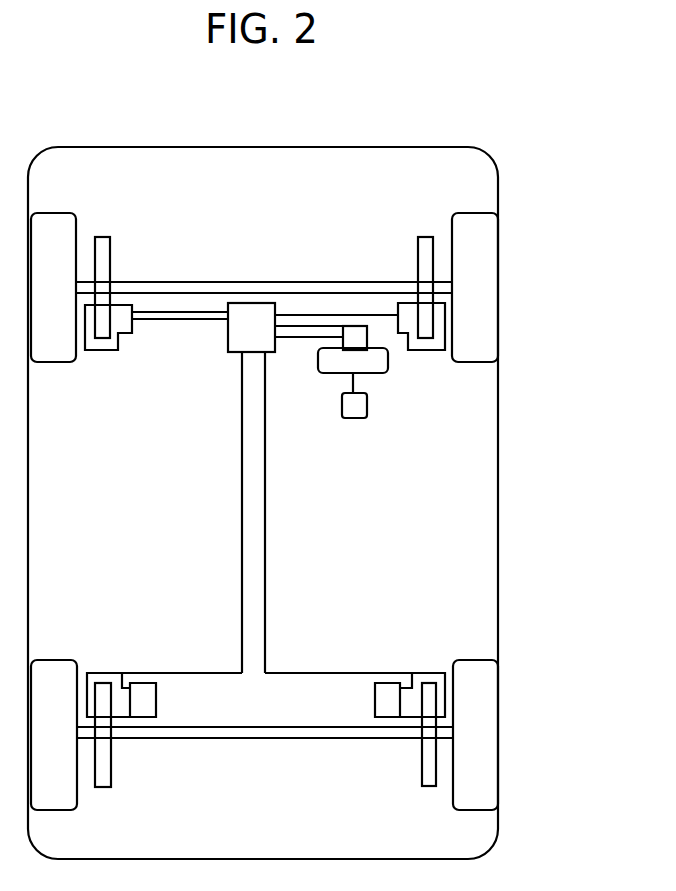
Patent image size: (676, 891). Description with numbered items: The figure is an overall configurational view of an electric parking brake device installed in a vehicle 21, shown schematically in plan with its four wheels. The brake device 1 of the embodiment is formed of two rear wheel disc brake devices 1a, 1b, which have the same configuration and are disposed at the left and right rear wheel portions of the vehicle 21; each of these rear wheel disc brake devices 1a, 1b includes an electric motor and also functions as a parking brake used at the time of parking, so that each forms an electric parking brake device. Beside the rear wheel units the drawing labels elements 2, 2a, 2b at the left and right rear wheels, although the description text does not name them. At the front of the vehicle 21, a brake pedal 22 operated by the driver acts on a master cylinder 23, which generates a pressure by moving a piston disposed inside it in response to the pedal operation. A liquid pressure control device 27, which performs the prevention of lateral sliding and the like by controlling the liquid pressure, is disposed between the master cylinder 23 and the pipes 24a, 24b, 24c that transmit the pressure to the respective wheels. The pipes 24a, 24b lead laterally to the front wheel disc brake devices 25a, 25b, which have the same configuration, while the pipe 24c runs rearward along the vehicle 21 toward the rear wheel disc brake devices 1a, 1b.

The vehicle 21 is at (517, 198).
The brake device 1 is at (276, 654).
The rear wheel disc brake device 1a is at (105, 672).
The rear wheel disc brake device 1b is at (428, 671).
The rear wheel bracket/knuckle 2 is at (265, 759).
The left rear bracket 2a is at (113, 767).
The right rear bracket 2b is at (420, 762).
The brake pedal 22 is at (357, 420).
The master cylinder 23 is at (356, 325).
The pipe 24a is at (178, 313).
The pipe 24b is at (302, 325).
The pipe 24c is at (267, 543).
The front wheel disc brake device 25a is at (112, 352).
The front wheel disc brake device 25b is at (430, 352).
The liquid pressure control device 27 is at (272, 353).